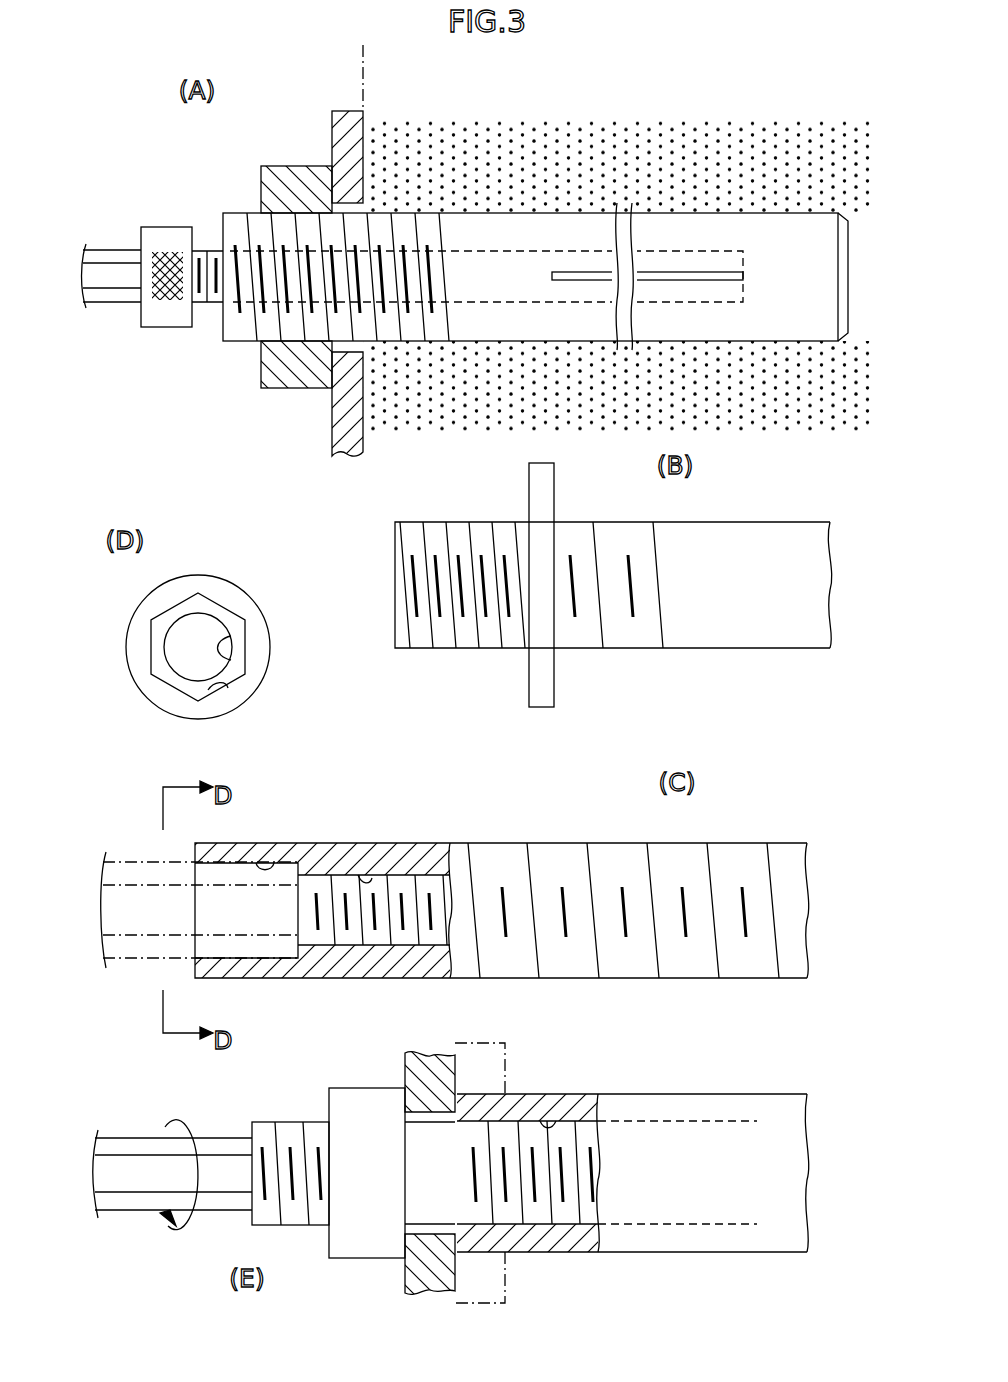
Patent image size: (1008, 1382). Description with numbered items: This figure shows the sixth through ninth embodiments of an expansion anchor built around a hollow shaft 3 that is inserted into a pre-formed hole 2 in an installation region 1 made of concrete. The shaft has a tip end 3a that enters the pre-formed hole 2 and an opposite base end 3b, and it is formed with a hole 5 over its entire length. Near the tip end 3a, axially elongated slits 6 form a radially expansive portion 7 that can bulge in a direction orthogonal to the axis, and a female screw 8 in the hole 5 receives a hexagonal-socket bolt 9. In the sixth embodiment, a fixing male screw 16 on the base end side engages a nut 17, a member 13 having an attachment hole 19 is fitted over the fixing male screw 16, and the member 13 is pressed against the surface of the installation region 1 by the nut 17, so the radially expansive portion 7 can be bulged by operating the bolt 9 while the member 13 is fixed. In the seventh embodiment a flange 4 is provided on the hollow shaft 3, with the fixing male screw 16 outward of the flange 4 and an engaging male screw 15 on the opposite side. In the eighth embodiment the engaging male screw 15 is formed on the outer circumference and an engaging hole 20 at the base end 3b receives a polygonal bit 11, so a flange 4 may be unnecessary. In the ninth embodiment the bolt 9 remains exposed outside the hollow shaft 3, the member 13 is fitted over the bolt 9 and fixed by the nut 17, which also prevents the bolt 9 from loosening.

The installation region 1 is at (410, 130).
The pre-formed hole 2 is at (535, 215).
The hollow shaft 3 is at (487, 325).
The tip end 3a is at (805, 240).
The base end 3b is at (245, 978).
The flange 4 is at (540, 488).
The hole 5 is at (510, 295).
The slits 6 is at (705, 280).
The radially expansive portion 7 is at (712, 208).
The female screw 8 is at (215, 648).
The bolt 9 is at (166, 318).
The polygonal bit 11 is at (108, 262).
The member 13 is at (330, 440).
The engaging male screw 15 is at (600, 623).
The fixing male screw 16 is at (255, 318).
The nut 17 is at (278, 370).
The attachment hole 19 is at (372, 330).
The engaging hole 20 is at (228, 683).